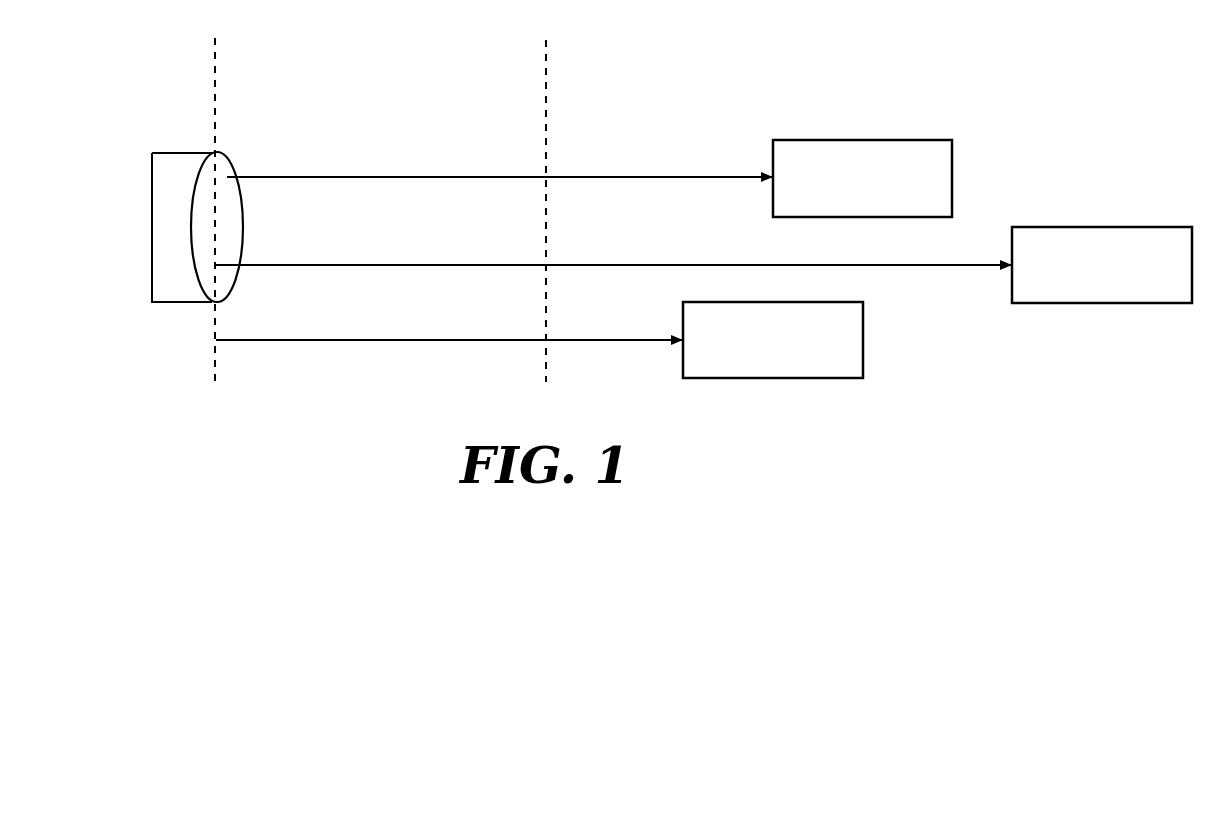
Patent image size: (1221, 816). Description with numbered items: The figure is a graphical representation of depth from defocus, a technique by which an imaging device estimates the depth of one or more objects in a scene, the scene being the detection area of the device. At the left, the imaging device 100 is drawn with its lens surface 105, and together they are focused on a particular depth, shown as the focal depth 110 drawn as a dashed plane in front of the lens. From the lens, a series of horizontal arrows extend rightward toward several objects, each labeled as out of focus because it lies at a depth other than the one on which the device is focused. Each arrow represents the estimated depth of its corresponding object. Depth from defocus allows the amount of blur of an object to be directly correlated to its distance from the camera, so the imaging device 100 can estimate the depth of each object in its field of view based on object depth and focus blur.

The imaging device 100 is at (175, 152).
The lens surface 105 is at (216, 57).
The depth of focus 110 is at (547, 58).